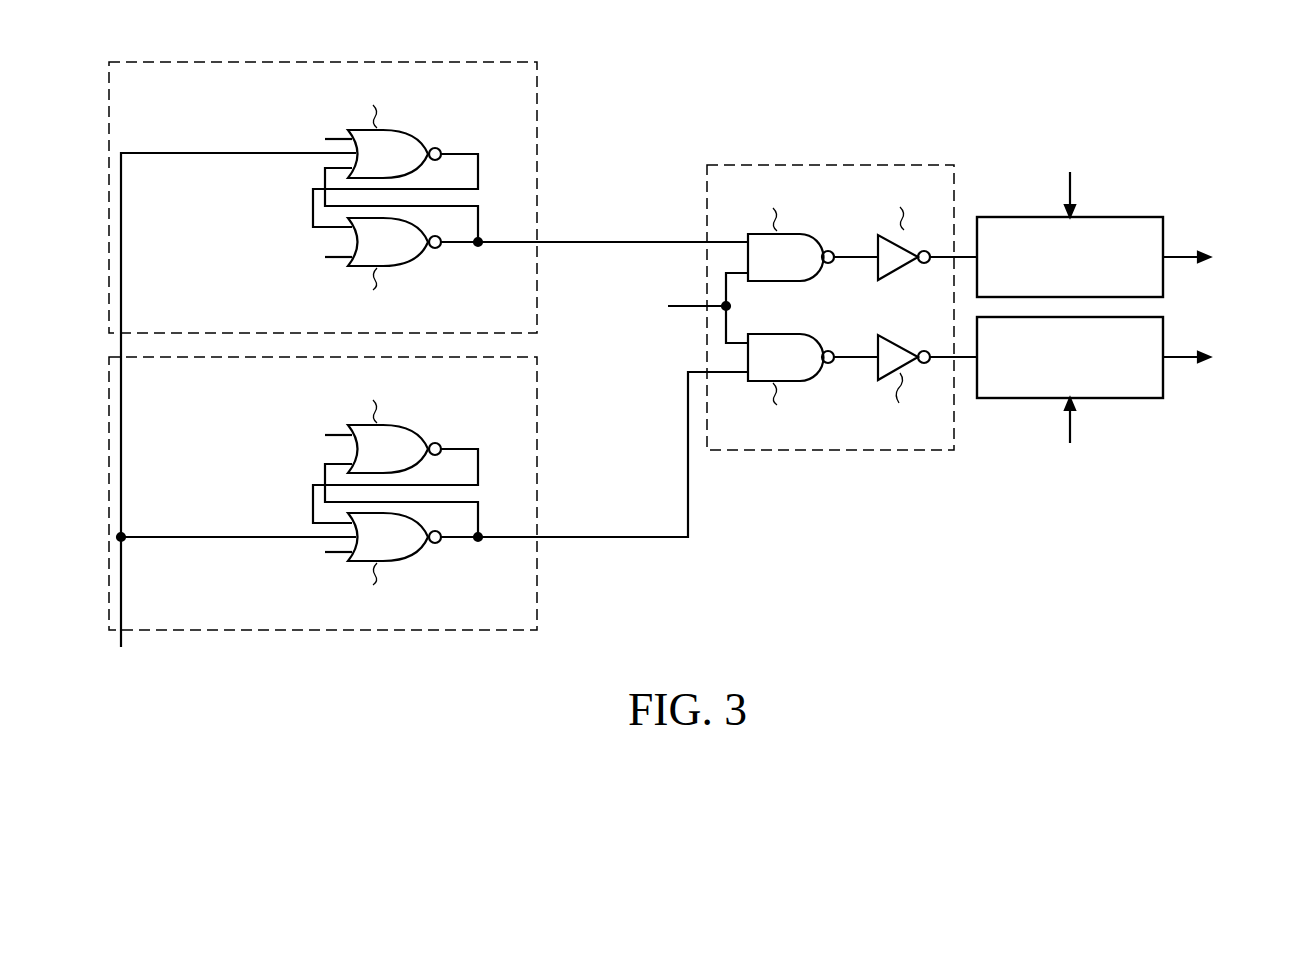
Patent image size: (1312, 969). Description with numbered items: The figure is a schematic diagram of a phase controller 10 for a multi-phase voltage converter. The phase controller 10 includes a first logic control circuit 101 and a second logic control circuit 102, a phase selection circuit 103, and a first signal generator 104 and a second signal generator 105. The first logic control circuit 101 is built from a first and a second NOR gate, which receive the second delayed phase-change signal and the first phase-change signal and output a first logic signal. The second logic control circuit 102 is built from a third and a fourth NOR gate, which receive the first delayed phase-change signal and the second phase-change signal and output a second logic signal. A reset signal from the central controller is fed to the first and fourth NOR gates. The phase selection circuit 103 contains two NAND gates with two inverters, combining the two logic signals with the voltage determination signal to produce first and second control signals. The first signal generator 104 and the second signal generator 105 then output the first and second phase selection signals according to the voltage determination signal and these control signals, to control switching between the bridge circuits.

The phase controller 10 is at (991, 66).
The first logic control circuit 101 is at (538, 107).
The second logic control circuit 102 is at (538, 598).
The phase selection circuit 103 is at (882, 451).
The first signal generator 104 is at (1120, 217).
The second signal generator 105 is at (1120, 398).